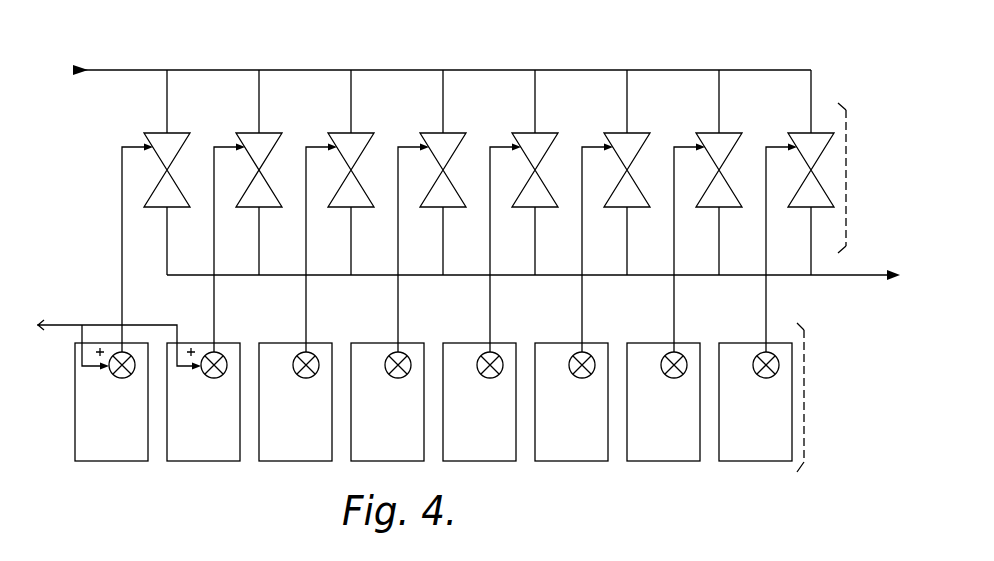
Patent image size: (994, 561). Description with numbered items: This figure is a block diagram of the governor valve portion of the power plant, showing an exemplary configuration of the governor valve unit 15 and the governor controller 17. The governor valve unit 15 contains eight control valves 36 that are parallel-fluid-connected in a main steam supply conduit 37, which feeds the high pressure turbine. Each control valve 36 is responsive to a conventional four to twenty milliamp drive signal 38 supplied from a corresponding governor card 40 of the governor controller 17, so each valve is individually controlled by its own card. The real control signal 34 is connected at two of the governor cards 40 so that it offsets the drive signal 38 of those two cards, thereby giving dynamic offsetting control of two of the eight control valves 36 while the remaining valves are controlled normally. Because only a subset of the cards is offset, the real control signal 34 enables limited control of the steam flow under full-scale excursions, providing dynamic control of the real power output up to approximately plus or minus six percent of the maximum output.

The governor valve unit 15 is at (846, 147).
The governor controller 17 is at (804, 368).
The real control signal 34 is at (68, 327).
The control valve 36 is at (250, 133).
The main steam supply conduit 37 is at (858, 278).
The drive signal 38 is at (214, 313).
The governor card 40 is at (120, 461).